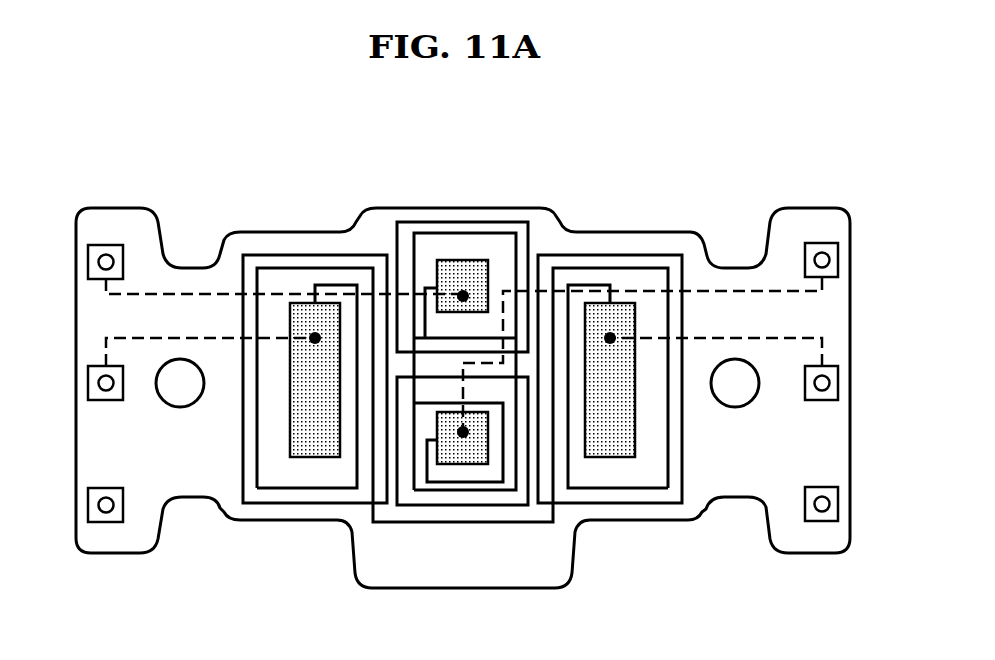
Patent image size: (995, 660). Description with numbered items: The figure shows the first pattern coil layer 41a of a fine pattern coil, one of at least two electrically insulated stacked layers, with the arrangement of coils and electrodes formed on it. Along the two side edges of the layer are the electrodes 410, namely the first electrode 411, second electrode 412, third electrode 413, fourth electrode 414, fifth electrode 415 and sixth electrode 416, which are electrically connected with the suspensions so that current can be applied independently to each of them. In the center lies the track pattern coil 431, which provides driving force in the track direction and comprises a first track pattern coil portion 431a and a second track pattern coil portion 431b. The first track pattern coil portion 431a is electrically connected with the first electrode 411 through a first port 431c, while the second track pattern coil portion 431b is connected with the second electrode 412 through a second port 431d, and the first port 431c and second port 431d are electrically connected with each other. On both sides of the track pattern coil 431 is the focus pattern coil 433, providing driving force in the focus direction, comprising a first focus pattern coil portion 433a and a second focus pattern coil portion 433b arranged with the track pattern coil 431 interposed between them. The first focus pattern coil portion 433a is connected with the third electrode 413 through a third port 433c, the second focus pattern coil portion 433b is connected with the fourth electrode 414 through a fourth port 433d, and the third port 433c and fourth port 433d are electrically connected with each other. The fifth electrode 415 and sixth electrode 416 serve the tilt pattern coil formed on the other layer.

The first pattern coil layer 41a is at (745, 195).
The electrode 410 is at (828, 240).
The first electrode 411 is at (87, 260).
The second electrode 412 is at (839, 260).
The third electrode 413 is at (87, 381).
The fourth electrode 414 is at (839, 383).
The fifth electrode 415 is at (87, 505).
The sixth electrode 416 is at (839, 506).
The track pattern coil 431 is at (500, 216).
The first track pattern coil portion 431a is at (430, 236).
The second track pattern coil portion 431b is at (432, 492).
The first port 431c is at (470, 268).
The second port 431d is at (473, 462).
The focus pattern coil 433 is at (344, 252).
The first focus pattern coil portion 433a is at (260, 275).
The second focus pattern coil portion 433b is at (596, 266).
The third port 433c is at (297, 300).
The fourth port 433d is at (625, 305).